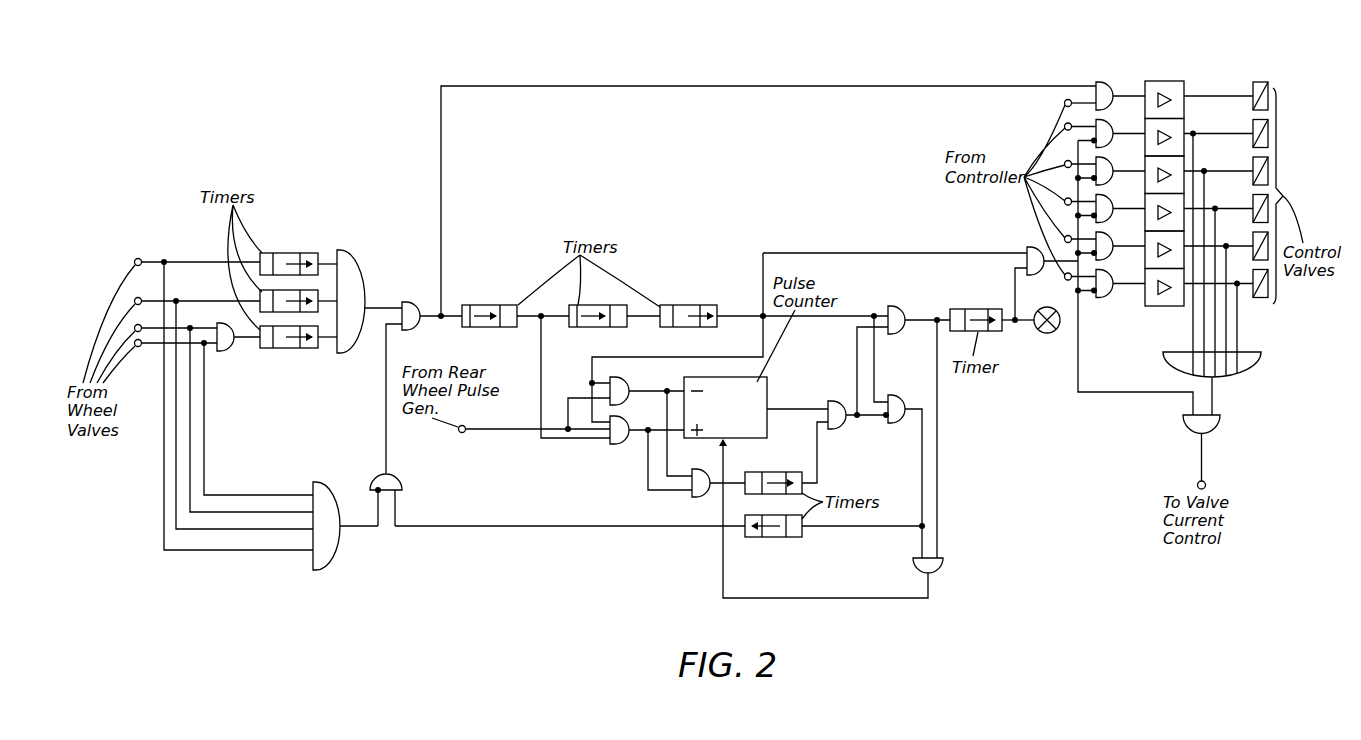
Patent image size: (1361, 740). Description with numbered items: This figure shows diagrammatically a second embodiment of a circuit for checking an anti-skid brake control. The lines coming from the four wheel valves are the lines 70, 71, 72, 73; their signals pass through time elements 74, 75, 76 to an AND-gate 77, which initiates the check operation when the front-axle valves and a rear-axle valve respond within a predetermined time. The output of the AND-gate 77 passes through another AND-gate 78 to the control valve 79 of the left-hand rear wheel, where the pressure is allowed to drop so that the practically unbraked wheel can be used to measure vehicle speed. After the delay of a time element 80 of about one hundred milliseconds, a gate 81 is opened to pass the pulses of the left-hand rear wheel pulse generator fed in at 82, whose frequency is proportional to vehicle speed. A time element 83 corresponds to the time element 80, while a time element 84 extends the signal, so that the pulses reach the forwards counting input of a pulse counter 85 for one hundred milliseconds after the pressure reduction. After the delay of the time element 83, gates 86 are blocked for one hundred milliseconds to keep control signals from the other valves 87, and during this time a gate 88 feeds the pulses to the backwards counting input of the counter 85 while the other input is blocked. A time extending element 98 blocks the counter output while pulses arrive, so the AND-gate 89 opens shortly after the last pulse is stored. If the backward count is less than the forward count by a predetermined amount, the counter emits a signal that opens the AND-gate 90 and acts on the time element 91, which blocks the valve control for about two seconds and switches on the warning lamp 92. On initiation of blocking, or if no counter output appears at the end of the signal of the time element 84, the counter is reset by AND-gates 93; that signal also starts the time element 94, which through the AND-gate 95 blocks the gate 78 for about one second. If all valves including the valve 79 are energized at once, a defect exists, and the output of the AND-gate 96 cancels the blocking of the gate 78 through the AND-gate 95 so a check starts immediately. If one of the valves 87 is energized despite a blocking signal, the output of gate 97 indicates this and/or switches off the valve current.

The valve line 70 is at (142, 257).
The valve line 71 is at (139, 297).
The valve line 72 is at (224, 409).
The valve line 73 is at (138, 347).
The time element 74 is at (285, 252).
The time element 75 is at (260, 298).
The time element 76 is at (288, 349).
The AND-gate 77 is at (365, 287).
The AND-gate 78 is at (416, 328).
The control valve 79 is at (1211, 88).
The time element 80 is at (485, 306).
The gate 81 is at (616, 445).
The pulse generator input 82 is at (462, 433).
The time element 83 is at (593, 306).
The time element 84 is at (682, 306).
The pulse counter 85 is at (768, 395).
The gates 86 is at (1108, 292).
The valves 87 is at (1278, 193).
The gate 88 is at (628, 384).
The AND-gate 89 is at (840, 427).
The AND-gate 90 is at (897, 307).
The time element 91 is at (968, 310).
The warning lamp 92 is at (1047, 334).
The AND-gates 93 is at (898, 396).
The time element 94 is at (777, 537).
The AND-gate 95 is at (380, 476).
The AND-gate 96 is at (330, 540).
The gate 97 is at (1210, 425).
The time extending element 98 is at (774, 482).